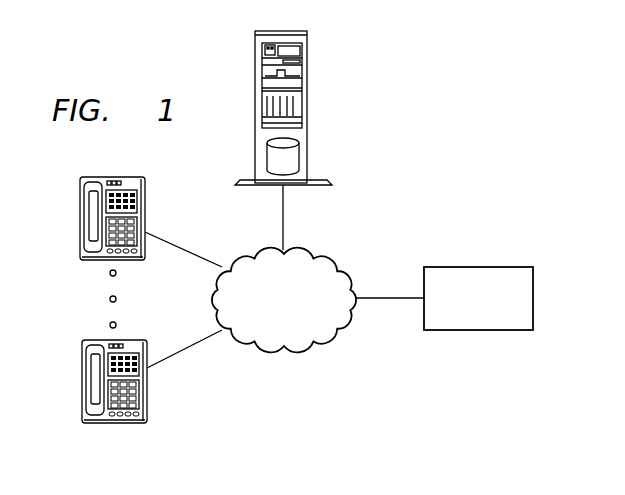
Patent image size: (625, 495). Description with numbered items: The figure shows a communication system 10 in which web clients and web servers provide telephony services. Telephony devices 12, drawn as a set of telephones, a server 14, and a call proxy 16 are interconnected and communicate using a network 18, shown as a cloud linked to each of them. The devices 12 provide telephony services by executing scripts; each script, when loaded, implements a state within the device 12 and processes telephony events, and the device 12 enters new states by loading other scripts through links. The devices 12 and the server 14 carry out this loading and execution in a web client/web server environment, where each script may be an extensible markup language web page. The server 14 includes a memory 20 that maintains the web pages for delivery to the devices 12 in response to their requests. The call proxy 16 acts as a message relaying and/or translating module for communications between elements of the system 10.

The communication system 10 is at (402, 194).
The telephony device 12 is at (80, 213).
The server 14 is at (287, 108).
The call proxy 16 is at (478, 266).
The network 18 is at (285, 353).
The memory 20 is at (267, 160).